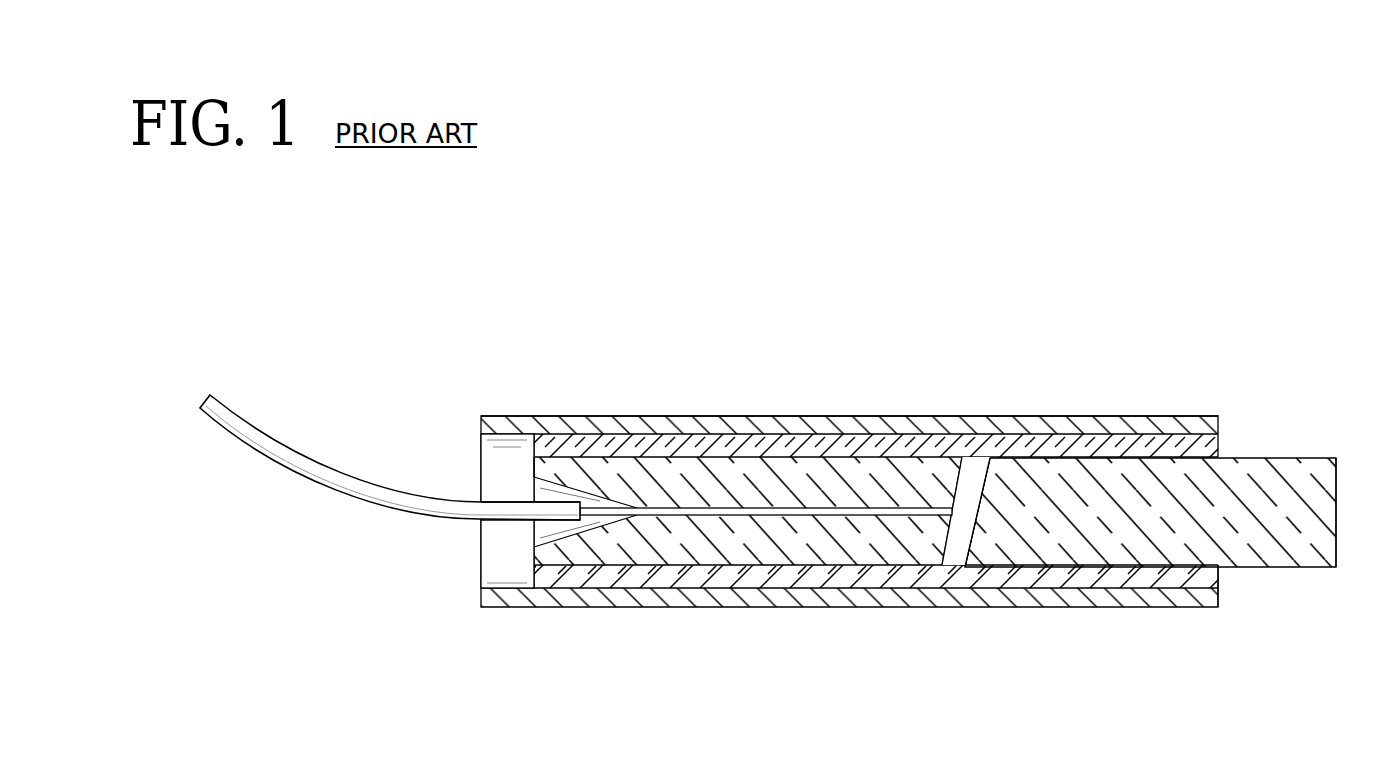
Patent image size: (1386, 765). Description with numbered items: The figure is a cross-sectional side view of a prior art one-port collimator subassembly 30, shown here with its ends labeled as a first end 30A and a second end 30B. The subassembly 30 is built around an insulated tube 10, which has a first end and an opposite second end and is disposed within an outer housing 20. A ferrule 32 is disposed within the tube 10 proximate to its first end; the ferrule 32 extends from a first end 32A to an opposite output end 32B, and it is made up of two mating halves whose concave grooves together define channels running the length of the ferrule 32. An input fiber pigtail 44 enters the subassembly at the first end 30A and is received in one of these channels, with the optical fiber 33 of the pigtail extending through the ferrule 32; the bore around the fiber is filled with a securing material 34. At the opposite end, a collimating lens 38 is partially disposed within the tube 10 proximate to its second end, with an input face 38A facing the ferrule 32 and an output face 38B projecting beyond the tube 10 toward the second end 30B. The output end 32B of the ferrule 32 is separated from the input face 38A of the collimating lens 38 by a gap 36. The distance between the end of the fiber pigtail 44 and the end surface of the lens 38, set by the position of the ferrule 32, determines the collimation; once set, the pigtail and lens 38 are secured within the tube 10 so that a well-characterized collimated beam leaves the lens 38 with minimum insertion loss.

The insulated tube 10 is at (890, 440).
The housing 20 is at (625, 418).
The collimator subassembly 30 is at (637, 232).
The first end of assembly 30A is at (456, 622).
The second end of assembly 30B is at (1230, 628).
The ferrule 32 is at (815, 470).
The first end of glass body 32A is at (533, 475).
The second end of glass body 32B is at (950, 566).
The optical fiber 33 is at (673, 516).
The epoxy filled tapered bore 34 is at (535, 536).
The gap 36 is at (945, 505).
The collimating lens 38 is at (1273, 458).
The first face of plug 38A is at (965, 565).
The second face of plug 38B is at (1337, 567).
The input fiber pigtail 44 is at (318, 467).